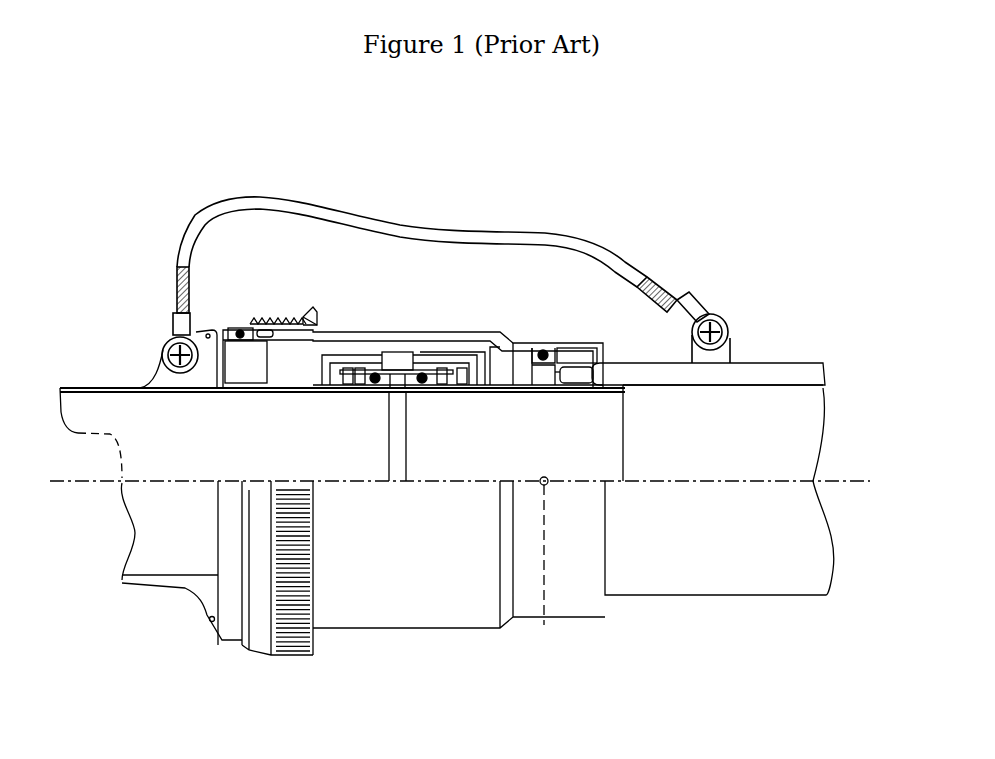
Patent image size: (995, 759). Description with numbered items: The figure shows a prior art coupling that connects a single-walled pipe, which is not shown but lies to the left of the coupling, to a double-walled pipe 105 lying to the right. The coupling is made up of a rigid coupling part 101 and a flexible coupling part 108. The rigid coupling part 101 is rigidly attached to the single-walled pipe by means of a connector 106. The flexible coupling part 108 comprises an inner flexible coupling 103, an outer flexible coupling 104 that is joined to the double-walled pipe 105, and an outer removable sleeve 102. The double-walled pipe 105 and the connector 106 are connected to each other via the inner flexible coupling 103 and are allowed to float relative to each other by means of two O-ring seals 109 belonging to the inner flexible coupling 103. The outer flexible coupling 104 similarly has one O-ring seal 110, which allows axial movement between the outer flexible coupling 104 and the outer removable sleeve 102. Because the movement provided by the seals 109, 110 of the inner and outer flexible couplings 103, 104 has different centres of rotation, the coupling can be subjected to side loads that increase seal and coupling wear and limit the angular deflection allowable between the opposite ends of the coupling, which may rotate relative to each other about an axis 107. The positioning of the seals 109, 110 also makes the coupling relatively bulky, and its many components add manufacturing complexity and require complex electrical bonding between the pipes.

The rigid coupling part 101 is at (231, 243).
The outer removable sleeve 102 is at (413, 256).
The inner flexible coupling 103 is at (457, 280).
The outer flexible coupling 104 is at (641, 300).
The double-walled pipe 105 is at (731, 331).
The connector 106 is at (327, 380).
The axis 107 is at (634, 571).
The flexible coupling part 108 is at (468, 396).
The O-ring seals 109 is at (411, 381).
The O-ring seal 110 is at (540, 346).